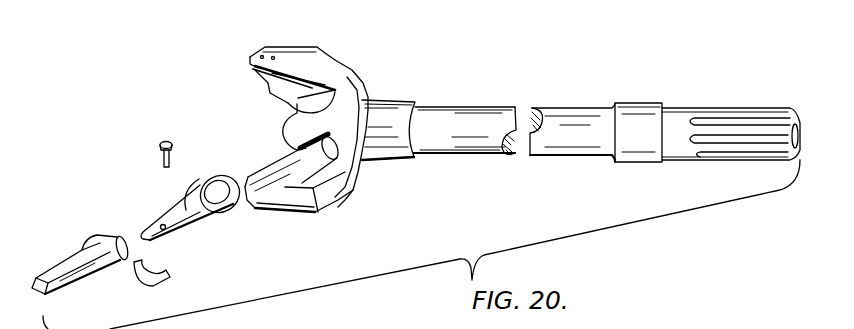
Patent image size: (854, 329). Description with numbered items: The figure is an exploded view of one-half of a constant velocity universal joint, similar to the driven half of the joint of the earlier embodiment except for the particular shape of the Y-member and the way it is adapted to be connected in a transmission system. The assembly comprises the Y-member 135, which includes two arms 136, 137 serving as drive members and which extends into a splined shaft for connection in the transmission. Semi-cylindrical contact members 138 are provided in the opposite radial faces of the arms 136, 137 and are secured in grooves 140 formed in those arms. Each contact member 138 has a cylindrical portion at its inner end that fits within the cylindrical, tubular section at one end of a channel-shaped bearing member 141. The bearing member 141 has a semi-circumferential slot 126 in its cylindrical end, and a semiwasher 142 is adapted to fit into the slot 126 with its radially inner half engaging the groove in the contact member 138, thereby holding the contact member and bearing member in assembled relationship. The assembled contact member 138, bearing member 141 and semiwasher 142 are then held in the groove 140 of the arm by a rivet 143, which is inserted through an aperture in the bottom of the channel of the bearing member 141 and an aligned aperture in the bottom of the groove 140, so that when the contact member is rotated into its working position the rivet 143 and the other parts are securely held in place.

The semi-circumferential slot 126 is at (198, 196).
The Y-member 135 is at (398, 100).
The arm 136 is at (311, 48).
The arm 137 is at (302, 208).
The contact member 138 is at (82, 277).
The groove 140 is at (262, 177).
The bearing member 141 is at (202, 219).
The semiwasher 142 is at (147, 282).
The rivet 143 is at (160, 147).